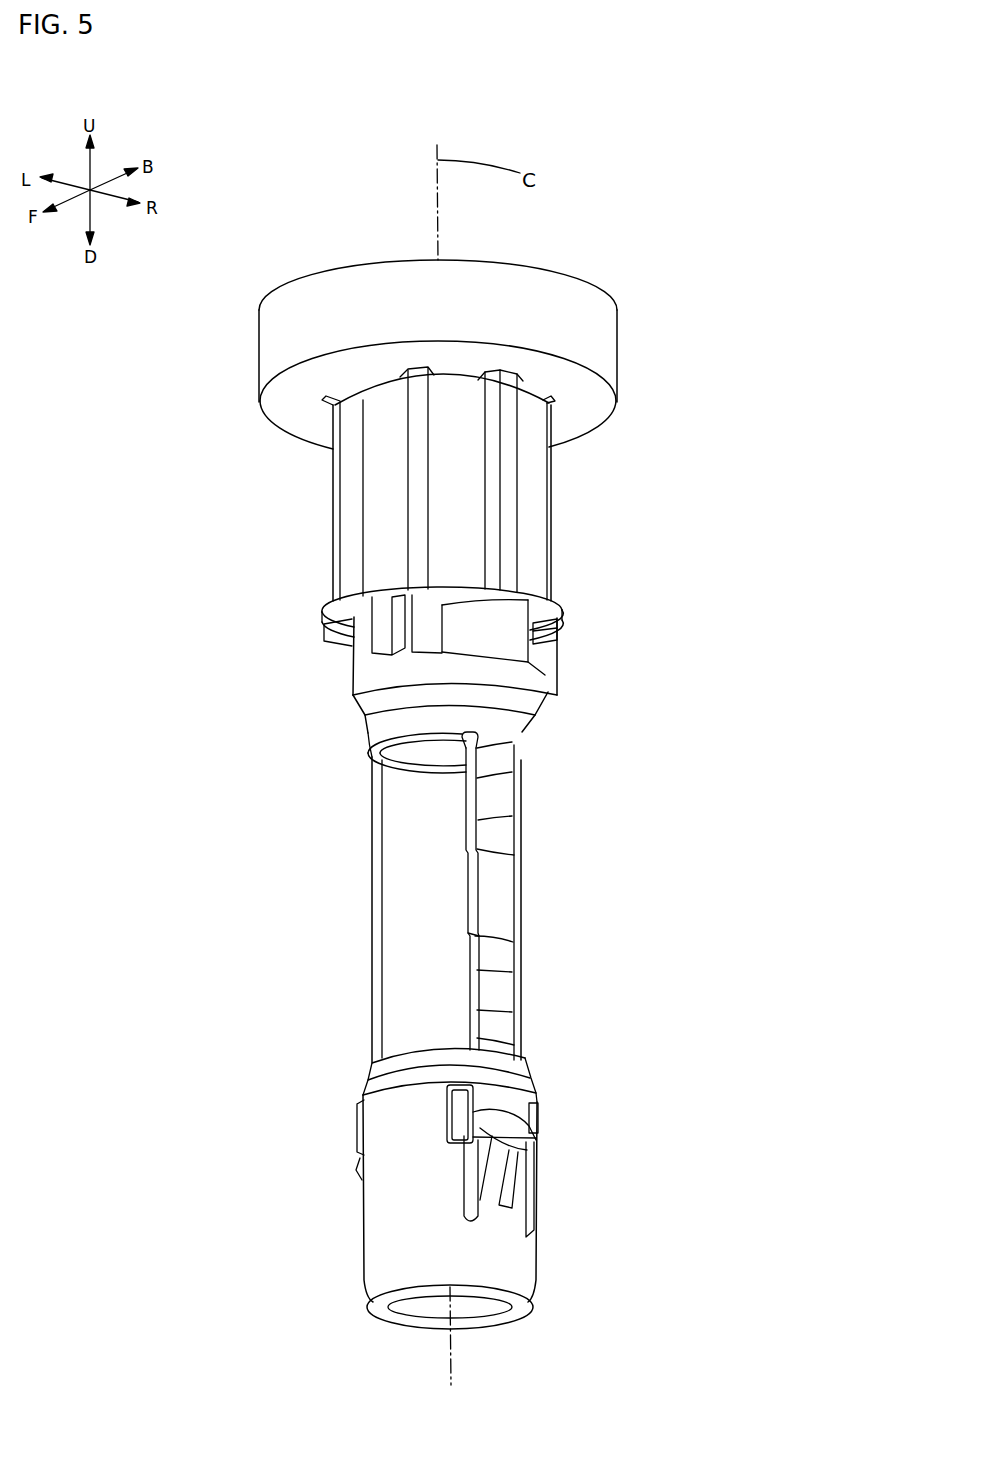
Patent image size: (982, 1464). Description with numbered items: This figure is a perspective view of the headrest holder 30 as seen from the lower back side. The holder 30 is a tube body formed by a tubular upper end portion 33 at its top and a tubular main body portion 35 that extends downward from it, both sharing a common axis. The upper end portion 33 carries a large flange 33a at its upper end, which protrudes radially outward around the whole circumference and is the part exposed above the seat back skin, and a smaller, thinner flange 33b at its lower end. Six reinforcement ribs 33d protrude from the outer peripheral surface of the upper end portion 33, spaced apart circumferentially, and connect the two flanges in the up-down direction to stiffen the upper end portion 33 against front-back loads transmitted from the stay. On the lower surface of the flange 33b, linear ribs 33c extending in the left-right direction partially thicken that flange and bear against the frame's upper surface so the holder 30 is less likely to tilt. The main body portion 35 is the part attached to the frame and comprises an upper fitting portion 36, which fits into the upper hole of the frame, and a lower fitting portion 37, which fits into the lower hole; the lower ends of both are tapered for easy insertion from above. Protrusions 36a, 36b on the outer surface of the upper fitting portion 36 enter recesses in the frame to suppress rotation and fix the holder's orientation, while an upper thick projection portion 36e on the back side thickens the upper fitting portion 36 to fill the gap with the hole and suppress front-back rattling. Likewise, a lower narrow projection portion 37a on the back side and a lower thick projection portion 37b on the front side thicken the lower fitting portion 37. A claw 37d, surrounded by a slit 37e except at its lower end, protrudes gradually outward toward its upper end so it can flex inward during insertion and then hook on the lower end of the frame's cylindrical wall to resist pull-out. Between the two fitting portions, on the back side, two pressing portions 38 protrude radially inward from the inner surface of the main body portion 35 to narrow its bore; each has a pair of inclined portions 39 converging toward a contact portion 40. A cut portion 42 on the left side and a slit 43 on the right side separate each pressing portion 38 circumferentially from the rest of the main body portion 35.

The holder 30 is at (720, 253).
The upper end portion 33 is at (438, 484).
The flange 33a is at (598, 331).
The flange 33b is at (556, 618).
The linear ribs 33c is at (338, 626).
The reinforcement ribs 33d is at (572, 540).
The main body portion 35 is at (447, 897).
The upper fitting portion 36 is at (457, 676).
The protrusion 36a is at (545, 690).
The protrusion 36b is at (387, 658).
The upper thick projection portion 36e is at (464, 642).
The lower fitting portion 37 is at (454, 1193).
The lower narrow projection portion 37a is at (455, 1106).
The lower thick projection portion 37b is at (356, 1128).
The claw 37d is at (528, 1153).
The slit 37e is at (468, 1192).
The pressing portion 38 is at (492, 891).
The inclined portions 39 is at (497, 763).
The contact portion 40 is at (492, 806).
The cut portion 42 is at (378, 882).
The slit 43 is at (512, 786).